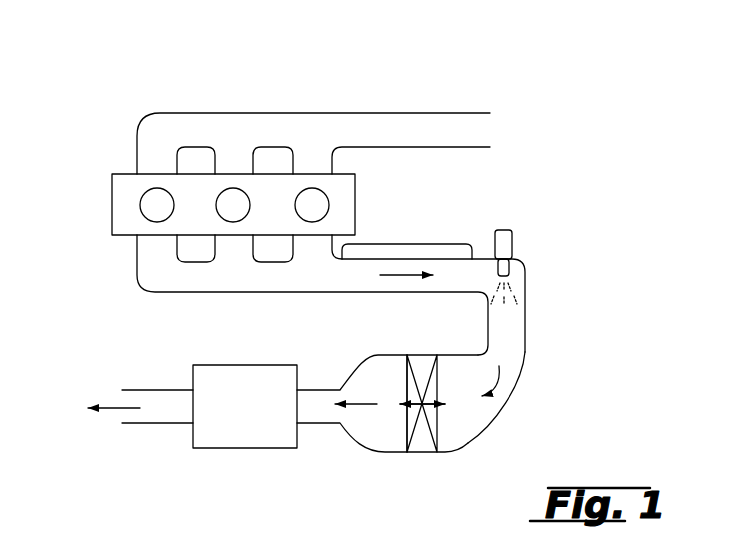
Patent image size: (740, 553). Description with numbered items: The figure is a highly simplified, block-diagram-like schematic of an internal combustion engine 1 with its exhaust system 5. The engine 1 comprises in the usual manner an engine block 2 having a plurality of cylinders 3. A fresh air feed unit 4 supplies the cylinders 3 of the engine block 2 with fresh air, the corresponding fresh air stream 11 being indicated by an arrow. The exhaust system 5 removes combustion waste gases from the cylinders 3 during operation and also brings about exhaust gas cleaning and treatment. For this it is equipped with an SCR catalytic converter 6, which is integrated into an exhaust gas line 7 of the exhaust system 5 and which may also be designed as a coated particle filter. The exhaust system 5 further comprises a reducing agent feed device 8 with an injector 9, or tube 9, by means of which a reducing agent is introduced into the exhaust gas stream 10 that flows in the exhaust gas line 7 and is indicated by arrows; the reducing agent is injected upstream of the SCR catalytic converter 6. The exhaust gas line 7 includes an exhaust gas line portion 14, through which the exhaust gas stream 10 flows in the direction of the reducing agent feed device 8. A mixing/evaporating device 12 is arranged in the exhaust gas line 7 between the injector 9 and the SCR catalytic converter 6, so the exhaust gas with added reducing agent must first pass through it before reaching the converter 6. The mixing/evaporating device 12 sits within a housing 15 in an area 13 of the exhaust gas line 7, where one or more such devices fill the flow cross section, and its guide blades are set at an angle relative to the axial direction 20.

The internal combustion engine 1 is at (603, 136).
The engine block 2 is at (105, 205).
The cylinders 3 is at (174, 205).
The fresh air feed unit 4 is at (330, 108).
The exhaust system 5 is at (534, 303).
The SCR catalytic converter 6 is at (238, 419).
The exhaust gas line 7 is at (522, 360).
The reducing agent feed device 8 is at (525, 244).
The injector 9 is at (504, 229).
The exhaust gas stream 10 is at (408, 278).
The fresh air stream 11 is at (485, 129).
The mixing/evaporating device 12 is at (433, 395).
The area 13 is at (392, 462).
The exhaust gas line portion 14 is at (405, 243).
The housing 15 is at (209, 436).
The axial direction 20 is at (413, 402).